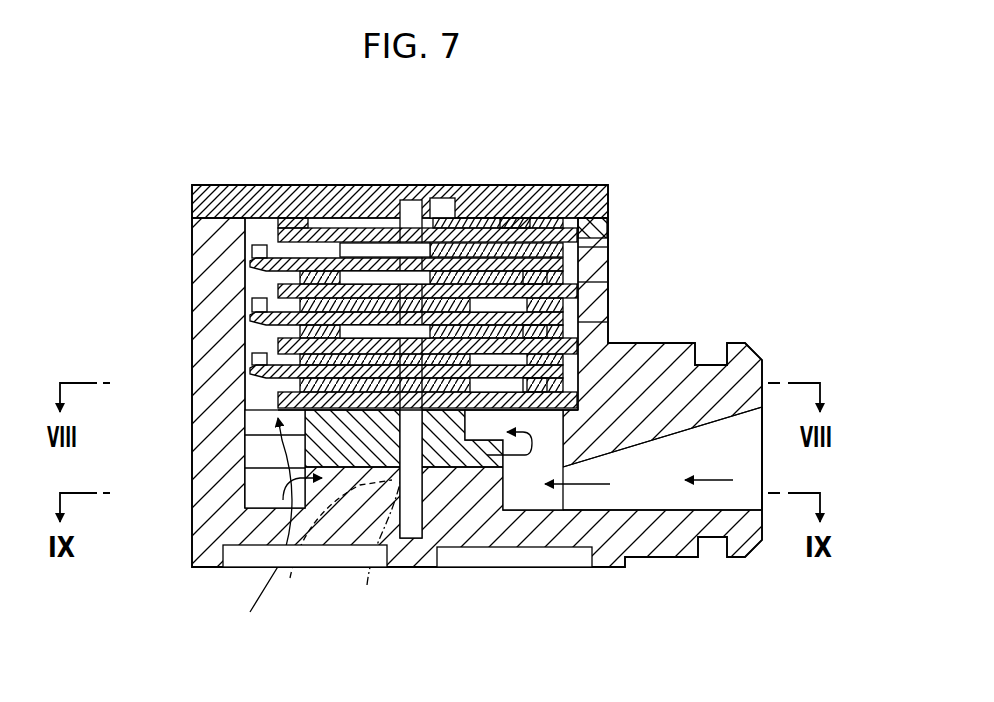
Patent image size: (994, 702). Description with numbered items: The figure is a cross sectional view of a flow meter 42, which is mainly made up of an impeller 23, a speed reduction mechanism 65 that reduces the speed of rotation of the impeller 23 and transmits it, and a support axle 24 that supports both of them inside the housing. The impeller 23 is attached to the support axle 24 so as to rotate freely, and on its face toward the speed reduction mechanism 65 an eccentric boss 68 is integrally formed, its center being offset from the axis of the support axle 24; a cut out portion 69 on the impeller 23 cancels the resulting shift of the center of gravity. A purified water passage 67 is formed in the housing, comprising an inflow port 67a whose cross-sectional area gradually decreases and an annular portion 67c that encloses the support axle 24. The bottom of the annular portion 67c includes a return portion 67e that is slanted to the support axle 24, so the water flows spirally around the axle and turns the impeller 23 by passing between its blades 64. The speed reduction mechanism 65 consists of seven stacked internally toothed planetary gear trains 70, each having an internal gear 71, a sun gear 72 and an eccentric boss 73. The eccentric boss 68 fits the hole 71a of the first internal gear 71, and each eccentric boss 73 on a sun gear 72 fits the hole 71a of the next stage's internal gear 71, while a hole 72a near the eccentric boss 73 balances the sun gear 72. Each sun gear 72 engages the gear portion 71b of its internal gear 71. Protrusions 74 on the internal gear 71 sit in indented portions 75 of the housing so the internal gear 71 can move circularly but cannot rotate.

The flow meter 42 is at (670, 160).
The internally toothed planetary gear train 70 is at (397, 133).
The internal gear 71 is at (298, 187).
The sun gear 72 is at (347, 187).
The eccentric boss 73 is at (383, 187).
The hole 71a is at (473, 187).
The gear portion 71b is at (607, 305).
The hole 72a is at (257, 187).
The protrusion 74 is at (607, 227).
The indented portion 75 is at (607, 247).
The support axle 24 is at (410, 187).
The speed reduction mechanism 65 is at (437, 187).
The blade 64 is at (258, 482).
The purified water passage 67 is at (540, 470).
The inflow port 67a is at (752, 463).
The annular portion 67c is at (290, 578).
The return portion 67e is at (375, 543).
The eccentric boss 68 is at (480, 418).
The cut out portion 69 is at (452, 440).
The impeller 23 is at (350, 568).